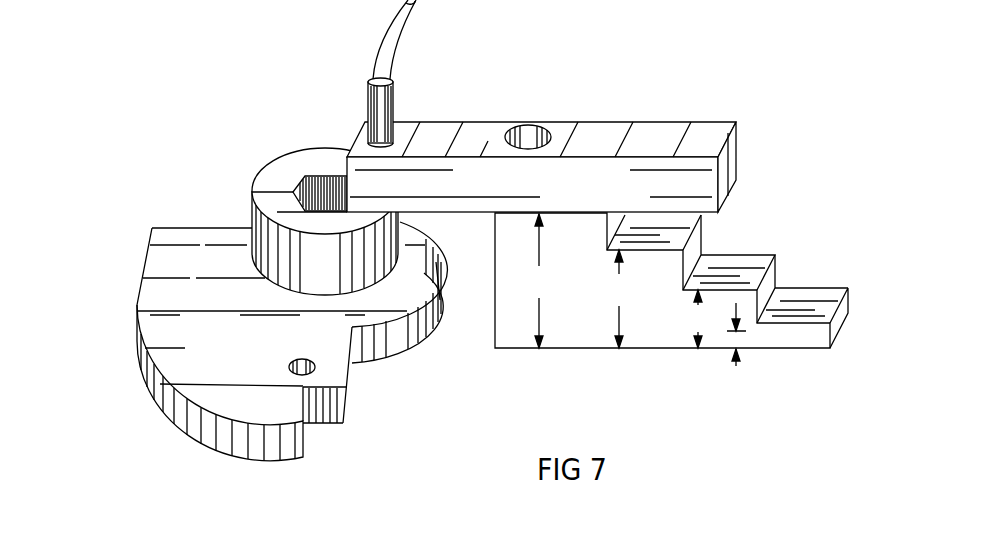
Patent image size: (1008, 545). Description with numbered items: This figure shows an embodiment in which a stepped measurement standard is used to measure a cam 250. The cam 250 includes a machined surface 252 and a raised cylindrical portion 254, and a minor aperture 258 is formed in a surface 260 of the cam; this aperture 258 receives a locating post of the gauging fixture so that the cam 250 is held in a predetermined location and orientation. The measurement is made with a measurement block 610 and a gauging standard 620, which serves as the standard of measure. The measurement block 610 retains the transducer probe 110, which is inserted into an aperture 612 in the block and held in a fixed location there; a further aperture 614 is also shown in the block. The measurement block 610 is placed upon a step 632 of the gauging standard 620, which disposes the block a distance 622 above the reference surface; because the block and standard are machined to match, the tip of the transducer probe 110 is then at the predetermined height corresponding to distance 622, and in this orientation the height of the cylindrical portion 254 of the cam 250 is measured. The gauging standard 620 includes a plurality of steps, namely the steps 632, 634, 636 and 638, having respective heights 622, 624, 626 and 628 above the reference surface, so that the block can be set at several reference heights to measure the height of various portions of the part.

The cam 250 is at (292, 282).
The machined surface 252 is at (215, 437).
The raised cylindrical portion 254 is at (314, 204).
The minor aperture 258 is at (299, 357).
The surface 260 is at (268, 354).
The transducer probe 110 is at (364, 117).
The aperture 612 is at (394, 118).
The hole in bar 614 is at (532, 124).
The measurement block 610 is at (613, 133).
The step 632 is at (446, 250).
The gauging standard 620 is at (663, 305).
The step 634 is at (690, 228).
The step 636 is at (737, 272).
The step 638 is at (803, 313).
The distance 622 is at (540, 281).
The height 624 is at (620, 299).
The height 626 is at (699, 319).
The height 628 is at (758, 346).